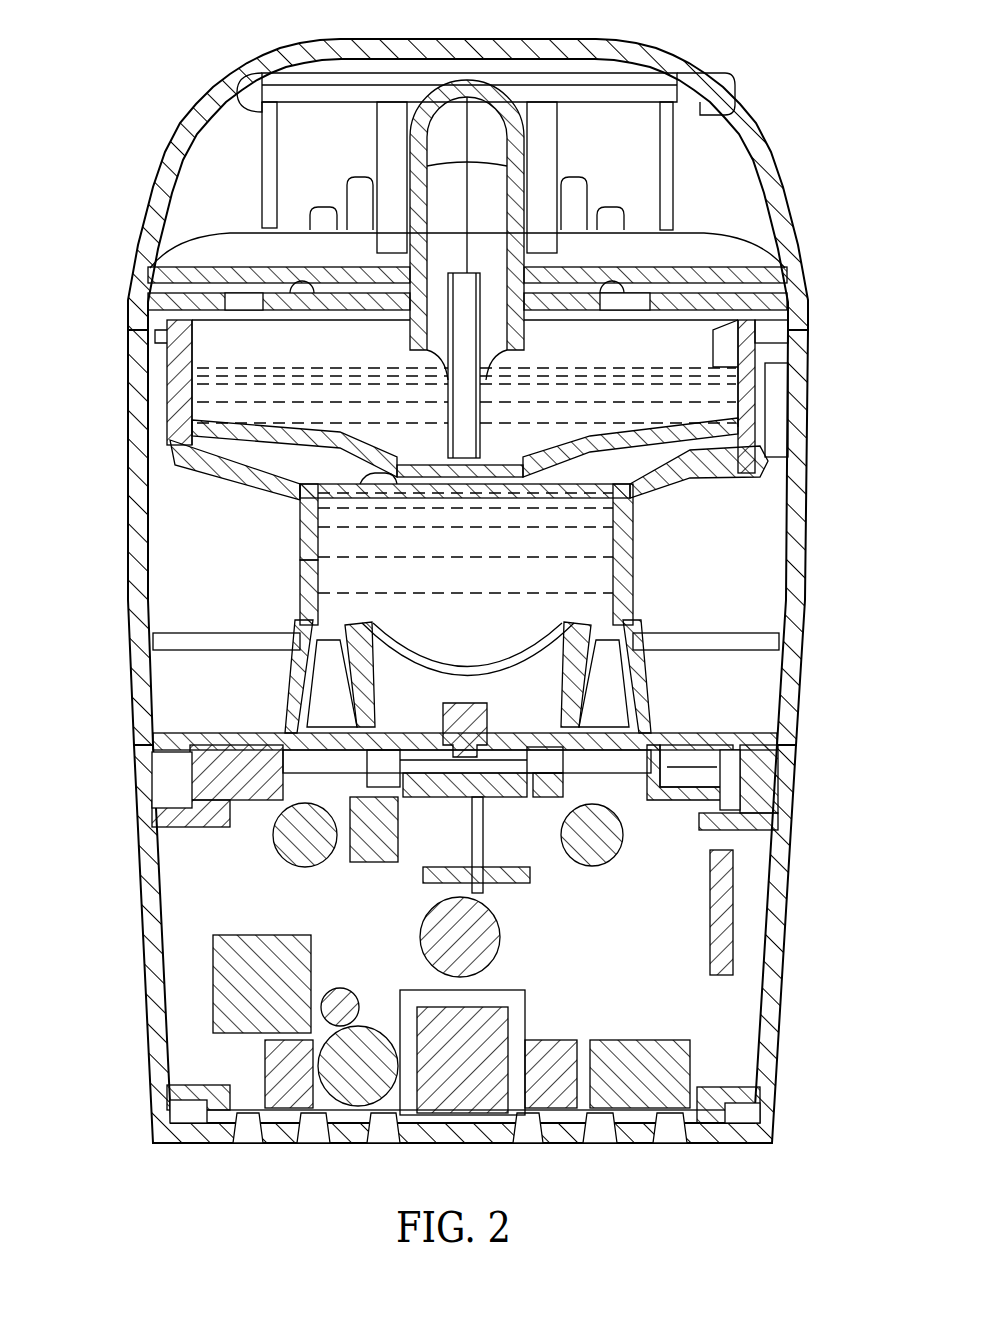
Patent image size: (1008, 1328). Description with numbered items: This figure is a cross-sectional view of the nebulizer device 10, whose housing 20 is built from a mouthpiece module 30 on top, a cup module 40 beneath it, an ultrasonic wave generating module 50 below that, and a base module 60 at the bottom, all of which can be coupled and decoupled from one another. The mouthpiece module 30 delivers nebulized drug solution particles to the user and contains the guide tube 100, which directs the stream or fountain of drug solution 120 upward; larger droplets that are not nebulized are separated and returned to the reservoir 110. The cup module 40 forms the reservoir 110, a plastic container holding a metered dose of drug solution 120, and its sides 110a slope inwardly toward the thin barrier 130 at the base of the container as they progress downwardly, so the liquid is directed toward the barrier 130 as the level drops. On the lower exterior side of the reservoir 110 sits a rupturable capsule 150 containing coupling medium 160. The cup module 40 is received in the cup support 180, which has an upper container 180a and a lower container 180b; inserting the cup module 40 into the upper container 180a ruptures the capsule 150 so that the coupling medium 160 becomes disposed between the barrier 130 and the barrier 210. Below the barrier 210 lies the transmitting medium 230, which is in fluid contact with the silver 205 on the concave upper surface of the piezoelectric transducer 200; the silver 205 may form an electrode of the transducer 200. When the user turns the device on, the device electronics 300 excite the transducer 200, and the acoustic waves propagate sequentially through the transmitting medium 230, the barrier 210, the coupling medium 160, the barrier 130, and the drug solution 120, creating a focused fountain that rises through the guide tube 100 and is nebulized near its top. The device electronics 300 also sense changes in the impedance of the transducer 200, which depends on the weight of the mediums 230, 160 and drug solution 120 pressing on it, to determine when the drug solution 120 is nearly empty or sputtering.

The device 10 is at (122, 100).
The housing 20 is at (118, 232).
The mouthpiece module 30 is at (790, 165).
The cup module 40 is at (668, 412).
The ultrasonic wave generating module 50 is at (808, 608).
The base module 60 is at (797, 933).
The guide tube 100 is at (447, 410).
The reservoir/container 110 is at (782, 283).
The sides of the reservoir 110a is at (742, 392).
The drug solution 120 is at (200, 390).
The barrier 130 is at (205, 432).
The rupturable capsule 150 is at (628, 480).
The coupling medium 160 is at (632, 498).
The cup support 180 is at (695, 453).
The upper container 180a is at (585, 458).
The lower container 180b is at (305, 578).
The piezoelectric transducer 200 is at (545, 700).
The silver 205 is at (560, 605).
The barrier 210 is at (300, 530).
The transmitting medium 230 is at (556, 586).
The device electronics 300 is at (412, 936).